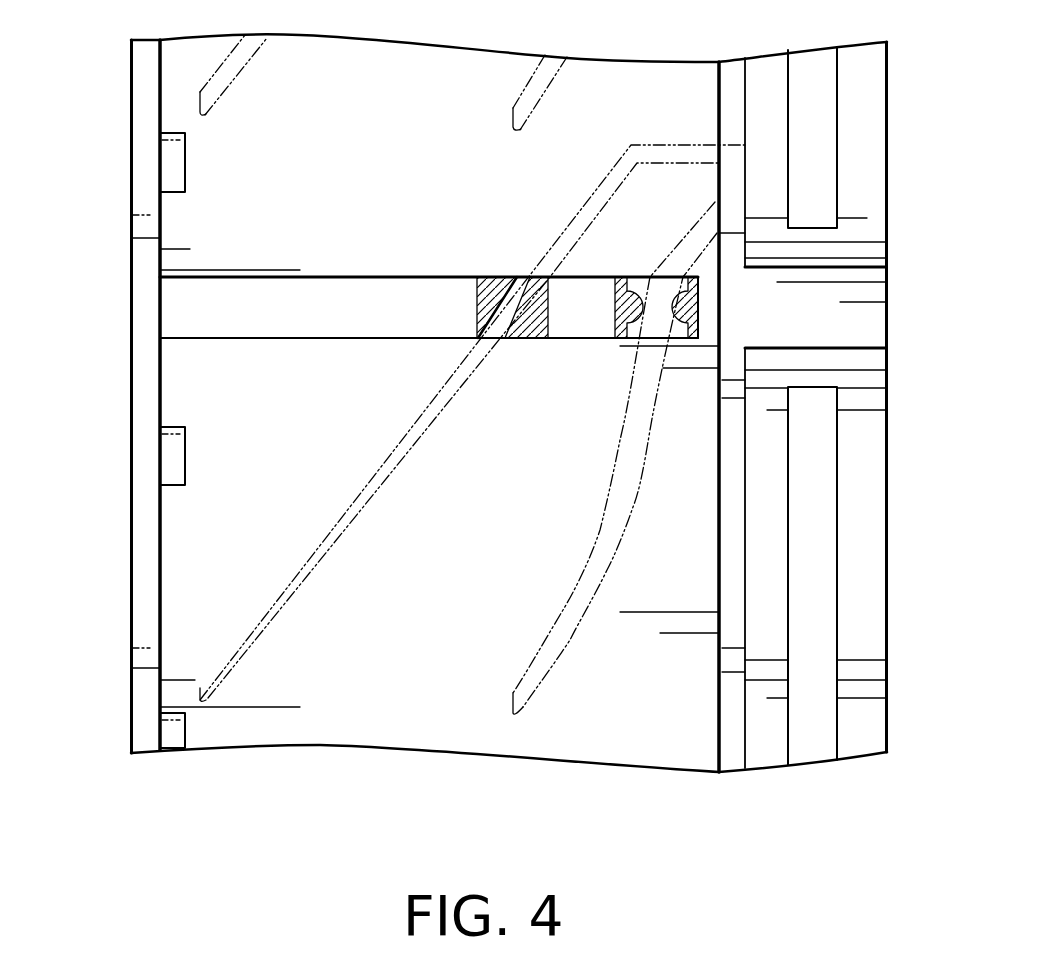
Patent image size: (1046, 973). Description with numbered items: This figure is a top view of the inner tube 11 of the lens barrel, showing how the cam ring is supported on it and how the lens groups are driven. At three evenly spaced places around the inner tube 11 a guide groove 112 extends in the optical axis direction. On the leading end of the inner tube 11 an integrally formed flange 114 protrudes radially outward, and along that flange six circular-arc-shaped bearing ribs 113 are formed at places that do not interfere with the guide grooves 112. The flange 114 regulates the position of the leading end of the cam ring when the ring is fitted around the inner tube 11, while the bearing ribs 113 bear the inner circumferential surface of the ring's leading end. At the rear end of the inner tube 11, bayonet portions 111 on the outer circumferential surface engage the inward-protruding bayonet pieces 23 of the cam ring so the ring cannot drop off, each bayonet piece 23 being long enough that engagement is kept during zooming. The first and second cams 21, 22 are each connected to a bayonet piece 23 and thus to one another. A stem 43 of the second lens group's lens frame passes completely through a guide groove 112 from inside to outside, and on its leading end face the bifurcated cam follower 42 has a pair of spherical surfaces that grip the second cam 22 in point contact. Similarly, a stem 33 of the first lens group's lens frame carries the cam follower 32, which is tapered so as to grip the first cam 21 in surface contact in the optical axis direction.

The inner tube 11 is at (767, 60).
The bayonet portion 111 is at (863, 312).
The guide groove 112 is at (217, 280).
The bearing rib 113 is at (177, 170).
The flange 114 is at (145, 412).
The first cam 21 is at (220, 650).
The second cam 22 is at (537, 693).
The bayonet piece 23 is at (733, 195).
The cam follower 32 is at (488, 277).
The stem 33 is at (530, 338).
The cam follower 42 is at (617, 310).
The stem 43 is at (693, 340).